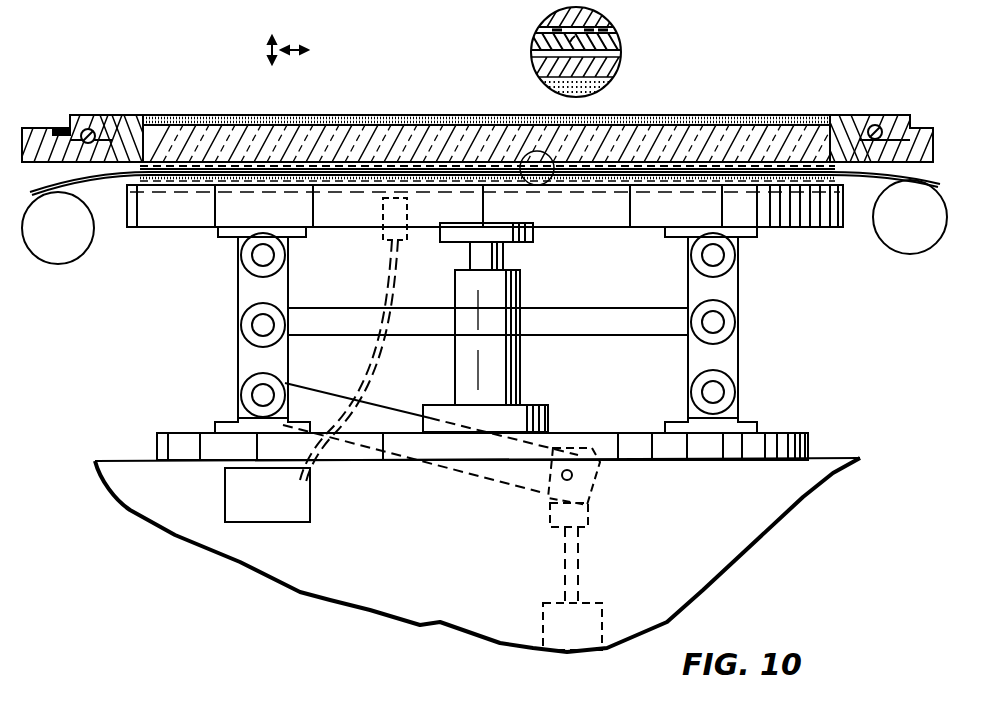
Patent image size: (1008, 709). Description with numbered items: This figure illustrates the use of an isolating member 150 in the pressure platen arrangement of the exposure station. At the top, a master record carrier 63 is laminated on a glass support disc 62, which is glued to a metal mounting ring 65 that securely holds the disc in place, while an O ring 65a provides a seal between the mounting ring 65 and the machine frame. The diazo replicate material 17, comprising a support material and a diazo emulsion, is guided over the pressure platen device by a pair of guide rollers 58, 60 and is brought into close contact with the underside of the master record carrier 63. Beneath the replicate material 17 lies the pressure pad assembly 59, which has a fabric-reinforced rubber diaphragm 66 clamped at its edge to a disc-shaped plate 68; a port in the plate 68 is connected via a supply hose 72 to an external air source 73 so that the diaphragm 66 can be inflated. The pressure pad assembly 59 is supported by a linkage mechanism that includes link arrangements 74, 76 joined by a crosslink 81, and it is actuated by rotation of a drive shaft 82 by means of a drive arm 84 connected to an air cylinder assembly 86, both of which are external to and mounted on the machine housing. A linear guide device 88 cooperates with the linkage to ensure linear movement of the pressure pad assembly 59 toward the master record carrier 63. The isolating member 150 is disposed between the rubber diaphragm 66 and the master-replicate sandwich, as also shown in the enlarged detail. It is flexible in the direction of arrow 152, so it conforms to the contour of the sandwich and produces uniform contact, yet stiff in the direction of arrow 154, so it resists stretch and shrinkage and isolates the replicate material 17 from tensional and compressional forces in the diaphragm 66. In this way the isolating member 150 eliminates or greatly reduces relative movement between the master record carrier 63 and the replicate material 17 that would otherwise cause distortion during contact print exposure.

The diazo replicate material 17 is at (167, 183).
The guide roller 58 is at (65, 252).
The pressure pad assembly 59 is at (170, 257).
The guide roller 60 is at (920, 245).
The glass support disc 62 is at (748, 130).
The master record carrier 63 is at (618, 160).
The metal mounting ring 65 is at (115, 126).
The O ring 65a is at (873, 125).
The rubber diaphragm 66 is at (543, 152).
The disc-shaped plate 68 is at (630, 197).
The supply hose 72 is at (383, 370).
The air source 73 is at (302, 522).
The link arrangement 74 is at (238, 290).
The link arrangement 76 is at (738, 285).
The crosslink 81 is at (595, 328).
The drive shaft 82 is at (256, 396).
The drive arm 84 is at (535, 498).
The air cylinder assembly 86 is at (606, 608).
The linear guide device 88 is at (522, 290).
The isolating member 150 is at (455, 165).
The arrow 152 is at (268, 46).
The arrow 154 is at (298, 46).